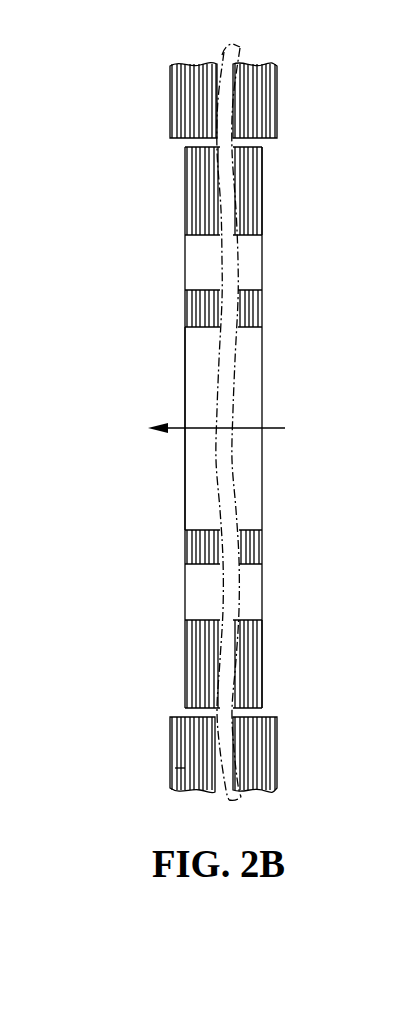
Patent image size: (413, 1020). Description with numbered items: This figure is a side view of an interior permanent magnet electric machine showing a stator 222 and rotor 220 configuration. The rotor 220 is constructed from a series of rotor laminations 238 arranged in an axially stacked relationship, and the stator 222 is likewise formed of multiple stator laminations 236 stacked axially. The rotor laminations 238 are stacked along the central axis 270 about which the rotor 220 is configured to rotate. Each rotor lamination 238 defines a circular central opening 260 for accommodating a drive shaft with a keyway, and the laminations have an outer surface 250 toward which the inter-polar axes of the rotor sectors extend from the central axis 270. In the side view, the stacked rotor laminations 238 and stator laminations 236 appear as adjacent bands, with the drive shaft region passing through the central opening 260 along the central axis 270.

The rotor 220 is at (276, 197).
The stator 222 is at (290, 117).
The stator laminations 236 is at (185, 790).
The rotor laminations 238 is at (197, 161).
The outer surface 250 is at (247, 712).
The circular central opening 260 is at (213, 325).
The central axis 270 is at (273, 428).